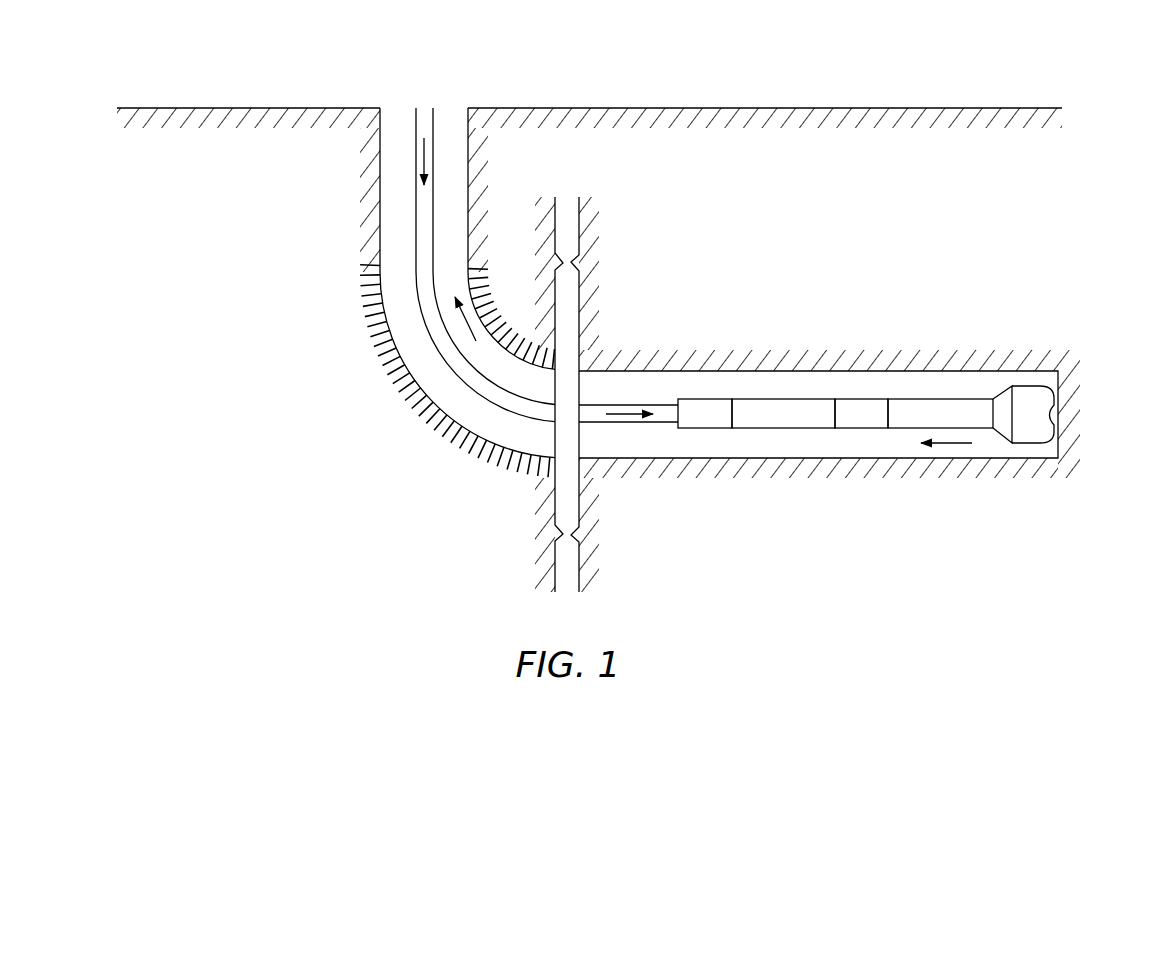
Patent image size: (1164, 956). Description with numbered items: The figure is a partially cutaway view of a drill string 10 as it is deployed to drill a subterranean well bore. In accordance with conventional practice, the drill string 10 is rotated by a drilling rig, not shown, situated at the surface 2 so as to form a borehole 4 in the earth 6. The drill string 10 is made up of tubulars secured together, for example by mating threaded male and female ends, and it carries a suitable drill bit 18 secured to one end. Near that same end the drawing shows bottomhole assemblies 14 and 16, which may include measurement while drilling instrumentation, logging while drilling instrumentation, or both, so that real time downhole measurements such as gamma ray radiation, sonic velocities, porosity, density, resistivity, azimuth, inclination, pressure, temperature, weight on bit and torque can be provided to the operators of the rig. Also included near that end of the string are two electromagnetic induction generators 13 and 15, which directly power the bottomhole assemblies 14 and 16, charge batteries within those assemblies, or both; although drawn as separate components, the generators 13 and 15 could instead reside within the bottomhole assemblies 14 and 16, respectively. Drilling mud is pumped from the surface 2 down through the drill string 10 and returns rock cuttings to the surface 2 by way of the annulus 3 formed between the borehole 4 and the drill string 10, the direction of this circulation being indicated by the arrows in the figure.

The surface 2 is at (633, 108).
The annulus 3 is at (437, 378).
The borehole 4 is at (468, 263).
The earth 6 is at (697, 226).
The drill string 10 is at (415, 283).
The electromagnetic induction generator 13 is at (695, 405).
The bottomhole assembly 14 is at (783, 407).
The electromagnetic induction generator 15 is at (868, 407).
The bottomhole assembly 16 is at (962, 407).
The drill bit 18 is at (1038, 407).